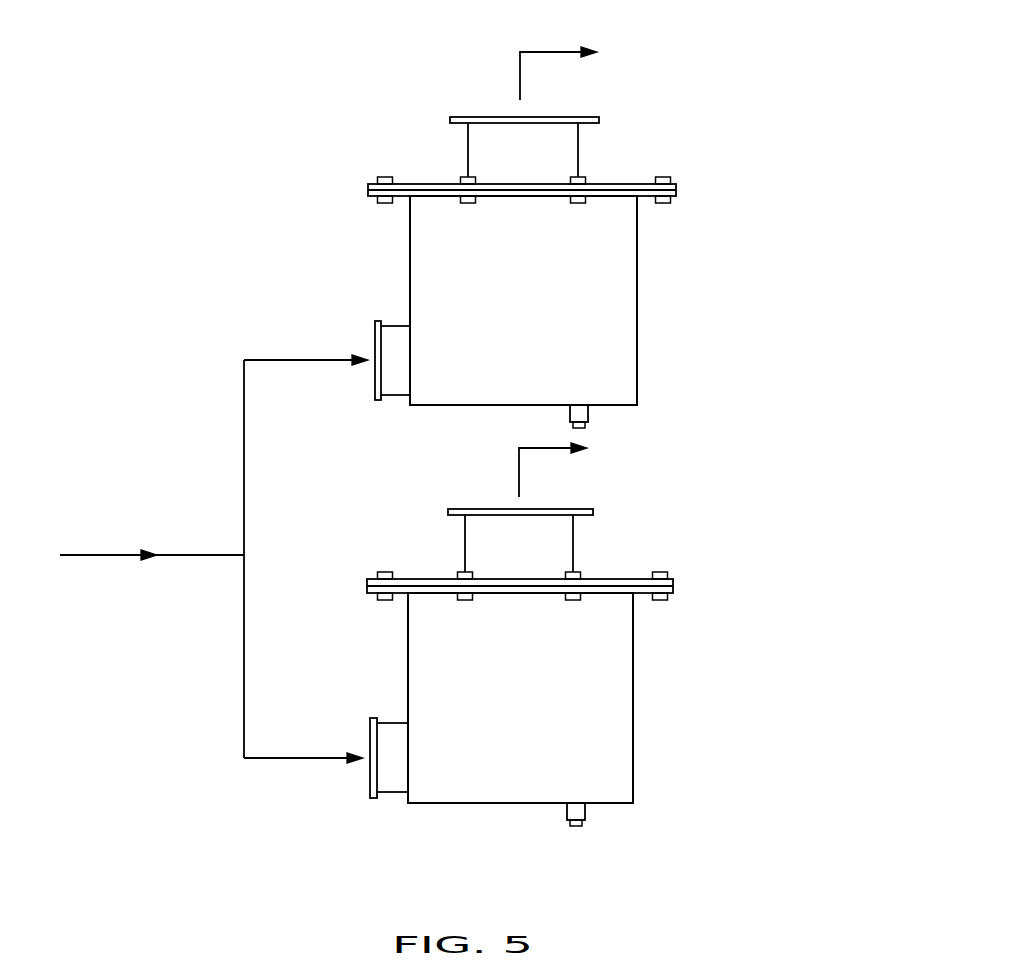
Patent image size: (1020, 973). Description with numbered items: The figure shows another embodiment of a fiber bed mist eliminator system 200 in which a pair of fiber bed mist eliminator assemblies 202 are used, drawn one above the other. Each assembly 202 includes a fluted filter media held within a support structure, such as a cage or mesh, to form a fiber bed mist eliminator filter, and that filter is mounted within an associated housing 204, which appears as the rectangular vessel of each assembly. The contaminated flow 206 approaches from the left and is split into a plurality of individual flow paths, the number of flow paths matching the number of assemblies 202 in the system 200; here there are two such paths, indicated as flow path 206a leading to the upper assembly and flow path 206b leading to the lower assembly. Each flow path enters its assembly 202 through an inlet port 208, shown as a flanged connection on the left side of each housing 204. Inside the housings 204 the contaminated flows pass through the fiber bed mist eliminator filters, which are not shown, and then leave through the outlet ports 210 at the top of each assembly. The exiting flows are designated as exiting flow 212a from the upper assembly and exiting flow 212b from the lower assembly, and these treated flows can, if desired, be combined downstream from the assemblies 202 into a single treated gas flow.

The fiber bed mist eliminator system 200 is at (822, 167).
The fiber bed mist eliminator assembly 202 is at (541, 501).
The housing 204 is at (627, 369).
The contaminated flow 206 is at (214, 548).
The flow path 206a is at (306, 349).
The flow path 206b is at (303, 748).
The inlet port 208 is at (400, 386).
The outlet port 210 is at (568, 152).
The exiting flow 212a is at (589, 70).
The exiting flow 212b is at (584, 468).